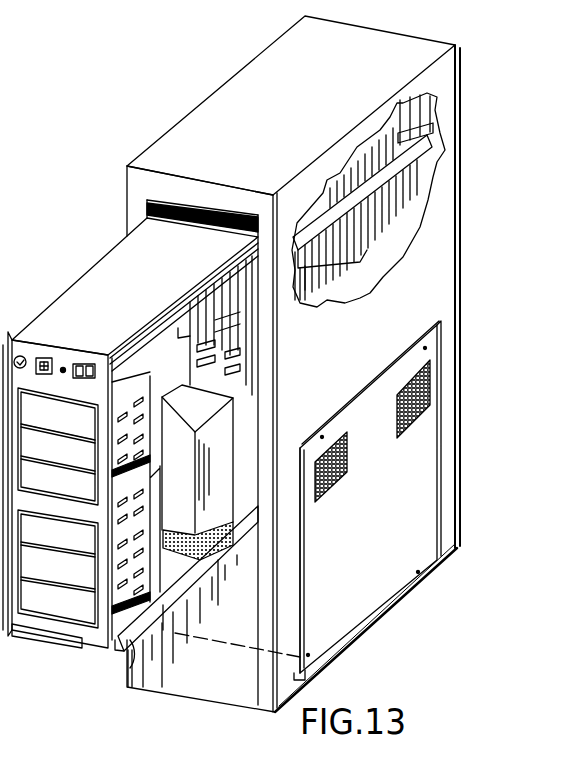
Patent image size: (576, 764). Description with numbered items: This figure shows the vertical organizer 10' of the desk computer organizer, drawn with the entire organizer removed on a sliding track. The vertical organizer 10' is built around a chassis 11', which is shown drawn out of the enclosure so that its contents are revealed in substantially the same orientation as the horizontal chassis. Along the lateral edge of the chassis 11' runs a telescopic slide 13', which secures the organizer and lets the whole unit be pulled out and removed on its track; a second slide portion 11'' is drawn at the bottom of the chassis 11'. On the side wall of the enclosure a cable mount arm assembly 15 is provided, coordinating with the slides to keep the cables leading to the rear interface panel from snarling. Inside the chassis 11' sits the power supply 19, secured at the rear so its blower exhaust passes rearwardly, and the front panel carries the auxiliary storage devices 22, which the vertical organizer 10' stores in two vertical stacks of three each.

The vertical organizer 10' is at (293, 361).
The chassis 11' is at (130, 433).
The bottom slide rail 11'' is at (171, 600).
The telescopic slide 13' is at (219, 307).
The cable mount arm assembly 15 is at (364, 280).
The power supply 19 is at (220, 468).
The auxiliary storage device 22 is at (68, 567).